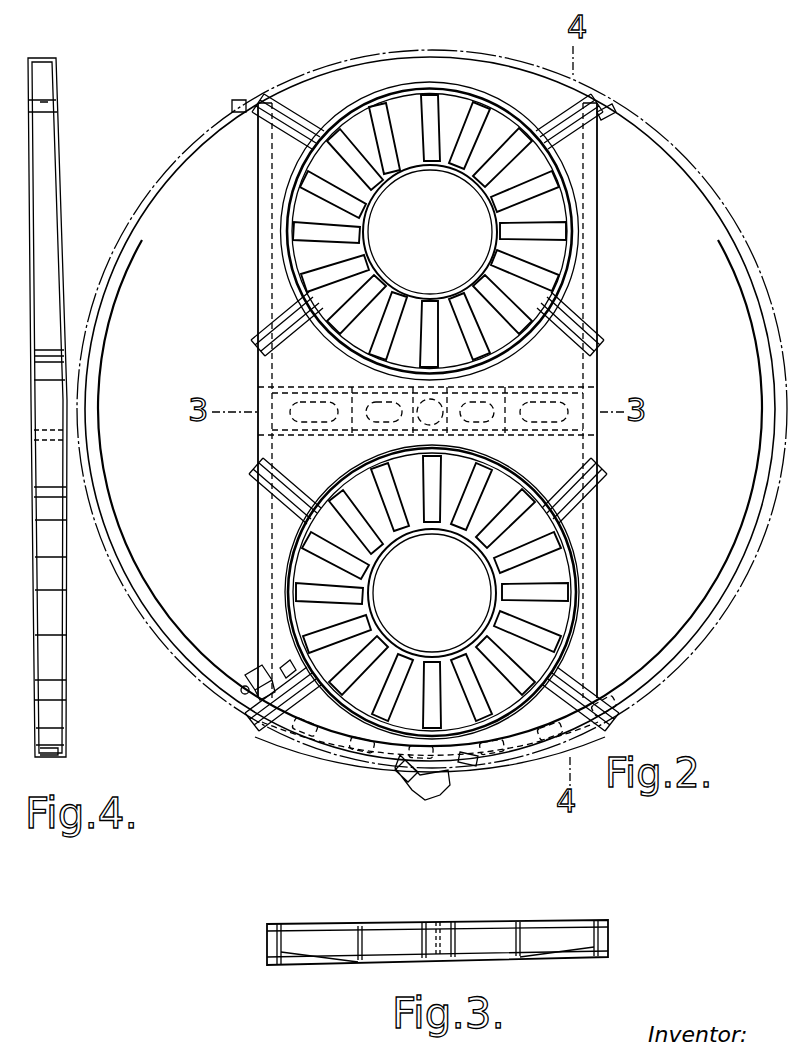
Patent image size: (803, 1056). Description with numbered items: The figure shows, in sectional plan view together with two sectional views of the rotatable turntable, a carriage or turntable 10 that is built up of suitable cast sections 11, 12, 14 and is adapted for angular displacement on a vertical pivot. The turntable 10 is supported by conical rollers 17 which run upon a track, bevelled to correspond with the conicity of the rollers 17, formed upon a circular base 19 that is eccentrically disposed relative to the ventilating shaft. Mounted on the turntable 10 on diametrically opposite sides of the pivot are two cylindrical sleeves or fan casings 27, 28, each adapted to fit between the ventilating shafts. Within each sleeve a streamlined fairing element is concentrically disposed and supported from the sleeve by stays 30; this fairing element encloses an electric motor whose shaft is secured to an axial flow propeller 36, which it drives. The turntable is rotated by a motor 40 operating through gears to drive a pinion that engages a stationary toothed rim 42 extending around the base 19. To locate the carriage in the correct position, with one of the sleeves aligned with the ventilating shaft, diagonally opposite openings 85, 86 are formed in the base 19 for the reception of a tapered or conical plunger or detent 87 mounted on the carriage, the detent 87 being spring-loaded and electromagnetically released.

In FIG. 2, the turntable 10 is at (583, 376).
In FIG. 4, the turntable 10 is at (66, 612).
In FIG. 2, the cast section 11 is at (287, 452).
In FIG. 4, the cast section 11 is at (35, 441).
In FIG. 3, the cast section 11 is at (410, 932).
In FIG. 2, the cast section 12 is at (605, 232).
In FIG. 4, the cast section 12 is at (62, 205).
In FIG. 2, the cast section 14 is at (518, 86).
In FIG. 4, the cast section 14 is at (58, 82).
In FIG. 2, the conical rollers 17 is at (352, 762).
In FIG. 2, the circular base 19 is at (723, 628).
In FIG. 2, the fan casing 27 is at (268, 549).
In FIG. 2, the fan casing 28 is at (286, 216).
In FIG. 2, the stays 30 is at (490, 226).
In FIG. 2, the axial flow propeller 36 is at (470, 125).
In FIG. 2, the motor 40 is at (408, 778).
In FIG. 2, the toothed rim 42 is at (238, 108).
In FIG. 2, the opening 85 is at (242, 695).
In FIG. 2, the opening 86 is at (605, 123).
In FIG. 2, the detent 87 is at (256, 680).